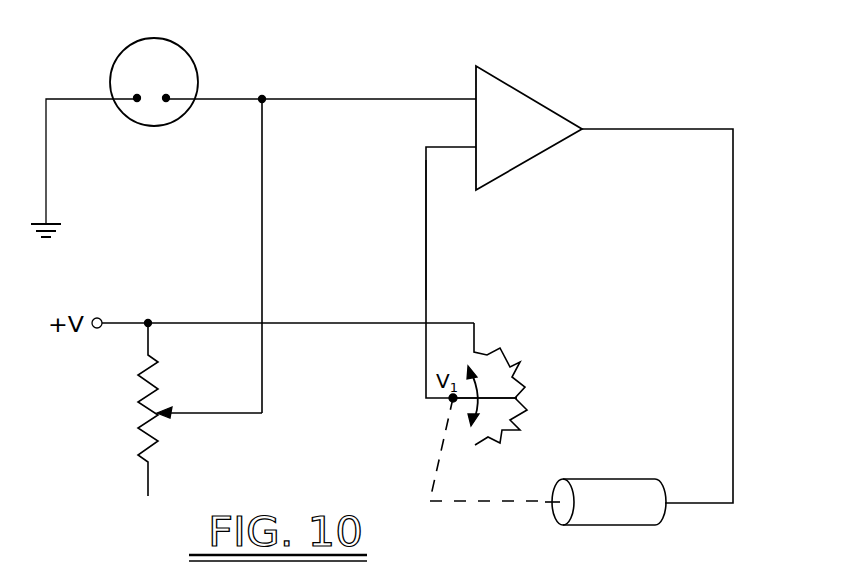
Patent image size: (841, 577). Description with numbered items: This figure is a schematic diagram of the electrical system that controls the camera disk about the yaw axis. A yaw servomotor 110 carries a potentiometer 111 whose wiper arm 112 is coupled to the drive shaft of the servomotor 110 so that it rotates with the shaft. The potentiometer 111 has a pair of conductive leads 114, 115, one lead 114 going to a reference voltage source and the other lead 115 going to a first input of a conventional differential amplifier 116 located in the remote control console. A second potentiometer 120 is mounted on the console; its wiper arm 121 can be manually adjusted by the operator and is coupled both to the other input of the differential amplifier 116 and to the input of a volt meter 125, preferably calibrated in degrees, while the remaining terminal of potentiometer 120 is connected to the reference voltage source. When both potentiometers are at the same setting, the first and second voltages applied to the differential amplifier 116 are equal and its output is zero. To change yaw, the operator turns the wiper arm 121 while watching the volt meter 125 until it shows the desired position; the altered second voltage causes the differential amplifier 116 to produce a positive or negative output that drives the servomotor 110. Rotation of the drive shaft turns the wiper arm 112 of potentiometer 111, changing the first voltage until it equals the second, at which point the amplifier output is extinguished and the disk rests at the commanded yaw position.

The yaw servomotor 110 is at (607, 515).
The potentiometer 111 is at (532, 426).
The wiper arm 112 is at (502, 397).
The conductive lead 114 is at (454, 323).
The conductive lead 115 is at (426, 256).
The differential amplifier 116 is at (528, 113).
The second potentiometer 120 is at (118, 416).
The wiper arm 121 is at (237, 414).
The volt meter 125 is at (180, 73).